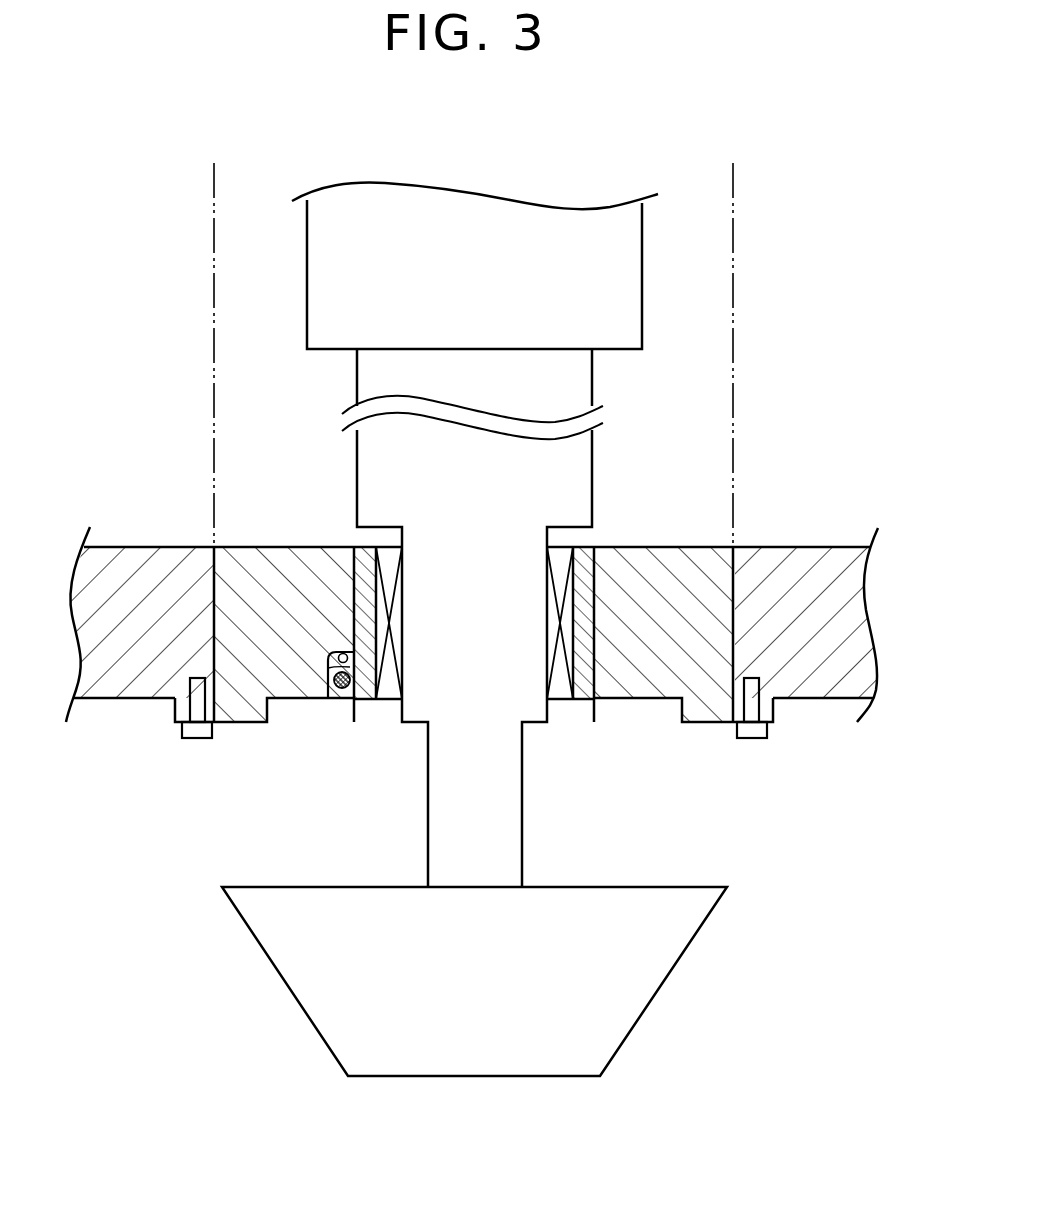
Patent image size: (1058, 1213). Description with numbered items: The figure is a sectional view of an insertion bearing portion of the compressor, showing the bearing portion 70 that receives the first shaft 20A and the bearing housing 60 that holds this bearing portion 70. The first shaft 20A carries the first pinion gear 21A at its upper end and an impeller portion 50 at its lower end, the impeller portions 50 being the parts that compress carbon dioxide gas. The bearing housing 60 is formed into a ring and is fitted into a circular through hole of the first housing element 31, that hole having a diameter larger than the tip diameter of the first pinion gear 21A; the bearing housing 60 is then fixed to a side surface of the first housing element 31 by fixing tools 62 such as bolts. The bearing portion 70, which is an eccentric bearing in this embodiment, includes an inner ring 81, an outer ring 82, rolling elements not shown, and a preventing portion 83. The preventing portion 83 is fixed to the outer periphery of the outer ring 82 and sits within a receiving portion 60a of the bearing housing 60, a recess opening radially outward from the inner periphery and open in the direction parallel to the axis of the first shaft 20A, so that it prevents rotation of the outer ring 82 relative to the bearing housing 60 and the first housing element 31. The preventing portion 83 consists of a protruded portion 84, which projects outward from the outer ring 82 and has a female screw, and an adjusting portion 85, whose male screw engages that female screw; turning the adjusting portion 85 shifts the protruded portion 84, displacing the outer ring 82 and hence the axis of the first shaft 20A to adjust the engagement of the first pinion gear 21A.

The first pinion gear 21A is at (618, 310).
The first shaft 20A is at (593, 477).
The first housing element 31 is at (833, 700).
The bearing housing 60 is at (474, 637).
The receiving portion 60a is at (340, 653).
The fixing tools 62 is at (750, 738).
The bearing portion 70 is at (428, 707).
The inner ring 81 is at (388, 703).
The outer ring 82 is at (369, 703).
The preventing portion 83 is at (308, 739).
The protruded portion 84 is at (342, 690).
The adjusting portion 85 is at (328, 695).
The impeller portion 50 is at (615, 1023).